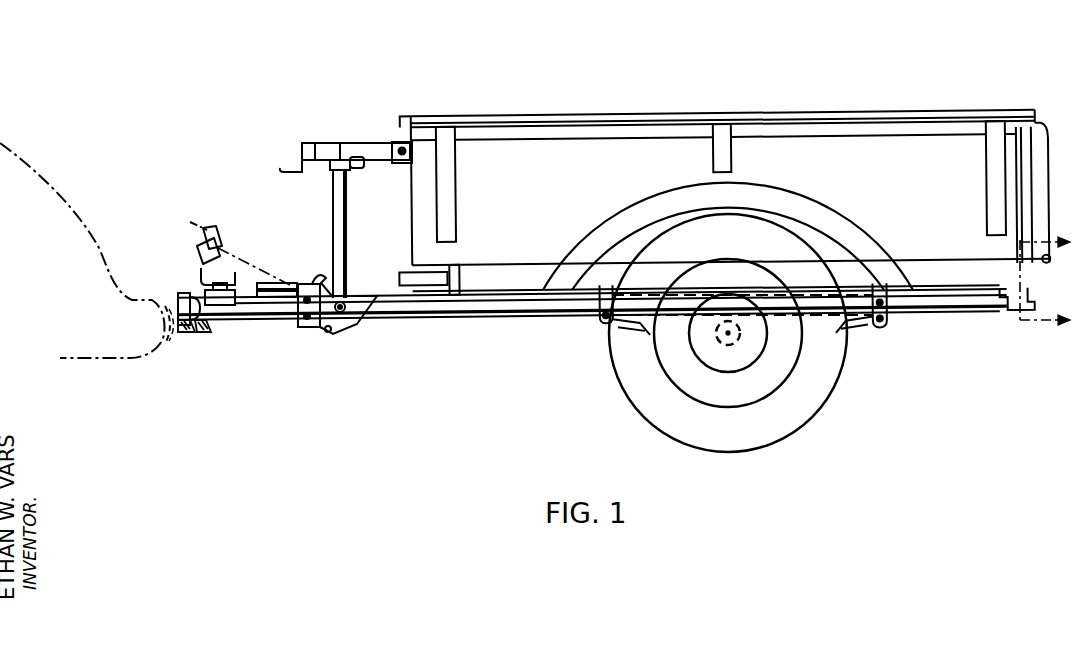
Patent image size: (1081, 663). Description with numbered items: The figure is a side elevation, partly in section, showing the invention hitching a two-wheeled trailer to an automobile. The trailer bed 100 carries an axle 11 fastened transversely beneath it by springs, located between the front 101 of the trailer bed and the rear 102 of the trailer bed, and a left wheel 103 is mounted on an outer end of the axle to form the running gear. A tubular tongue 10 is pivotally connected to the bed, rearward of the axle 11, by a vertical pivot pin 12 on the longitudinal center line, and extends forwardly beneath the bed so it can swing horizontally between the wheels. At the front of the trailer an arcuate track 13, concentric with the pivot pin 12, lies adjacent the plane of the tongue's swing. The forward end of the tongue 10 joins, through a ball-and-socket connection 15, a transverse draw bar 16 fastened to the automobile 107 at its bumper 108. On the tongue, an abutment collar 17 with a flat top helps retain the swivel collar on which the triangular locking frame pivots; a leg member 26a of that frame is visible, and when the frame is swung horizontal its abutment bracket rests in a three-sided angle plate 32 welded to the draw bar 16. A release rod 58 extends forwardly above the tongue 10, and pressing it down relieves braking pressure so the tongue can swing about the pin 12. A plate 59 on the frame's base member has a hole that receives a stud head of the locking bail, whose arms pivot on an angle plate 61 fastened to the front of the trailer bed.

The tubular tongue 10 is at (545, 312).
The axle 11 is at (724, 337).
The vertical pivot pin 12 is at (1010, 314).
The arcuate track 13 is at (402, 282).
The ball-and-socket connection 15 is at (210, 318).
The transverse draw bar 16 is at (186, 333).
The abutment collar 17 is at (1050, 280).
The leg member 26a is at (332, 222).
The three-sided angle plate 32 is at (178, 300).
The release rod 58 is at (266, 293).
The plate 59 is at (362, 142).
The angle plate 61 is at (407, 163).
The trailer bed 100 is at (866, 158).
The front of the trailer bed 101 is at (414, 207).
The rear of the trailer bed 102 is at (1040, 170).
The left wheel 103 is at (826, 381).
The automobile 107 is at (47, 198).
The bumper 108 is at (168, 342).